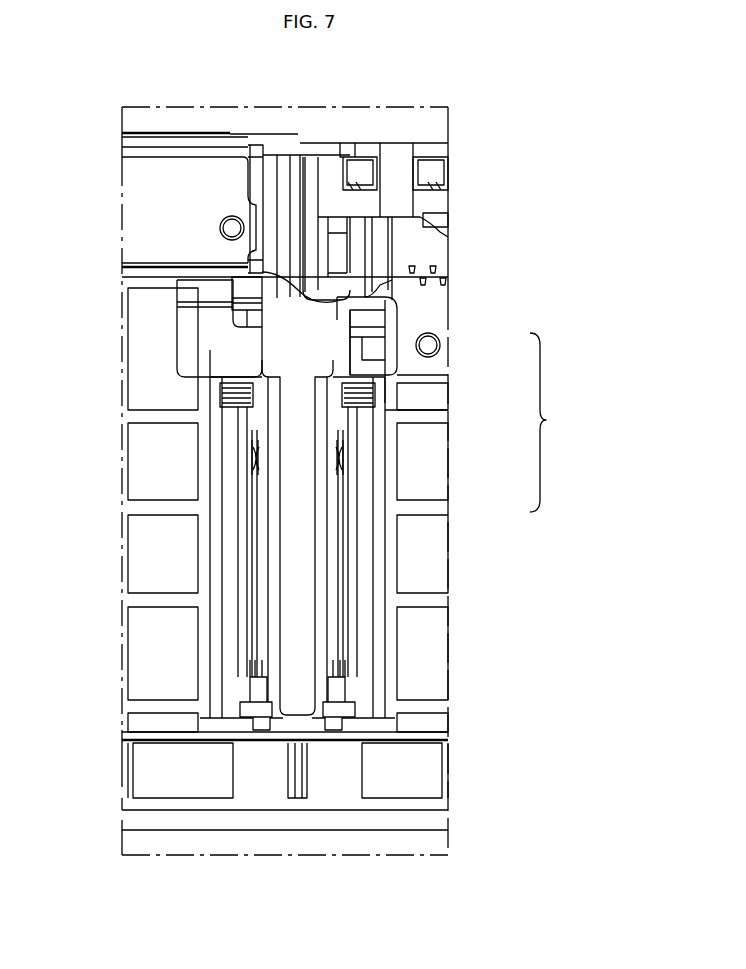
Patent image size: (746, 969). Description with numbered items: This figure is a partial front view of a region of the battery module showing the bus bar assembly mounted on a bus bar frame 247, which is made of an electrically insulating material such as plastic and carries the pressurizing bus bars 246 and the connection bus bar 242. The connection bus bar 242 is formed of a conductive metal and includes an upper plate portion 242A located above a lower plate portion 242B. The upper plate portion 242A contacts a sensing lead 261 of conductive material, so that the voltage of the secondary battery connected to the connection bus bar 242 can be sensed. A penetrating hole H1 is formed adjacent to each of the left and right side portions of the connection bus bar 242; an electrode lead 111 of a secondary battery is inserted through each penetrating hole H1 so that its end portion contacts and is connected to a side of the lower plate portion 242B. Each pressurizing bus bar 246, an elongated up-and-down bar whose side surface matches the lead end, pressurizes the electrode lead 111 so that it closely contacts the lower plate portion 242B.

The bus bar frame 247 is at (218, 128).
The sensing lead 261 is at (210, 348).
The upper plate portion 242A is at (312, 347).
The connection bus bar 242 is at (555, 422).
The lower plate portion 242B is at (300, 507).
The penetrating hole H1 is at (256, 452).
The electrode lead 111 is at (255, 548).
The pressurizing bus bar 246 is at (228, 647).